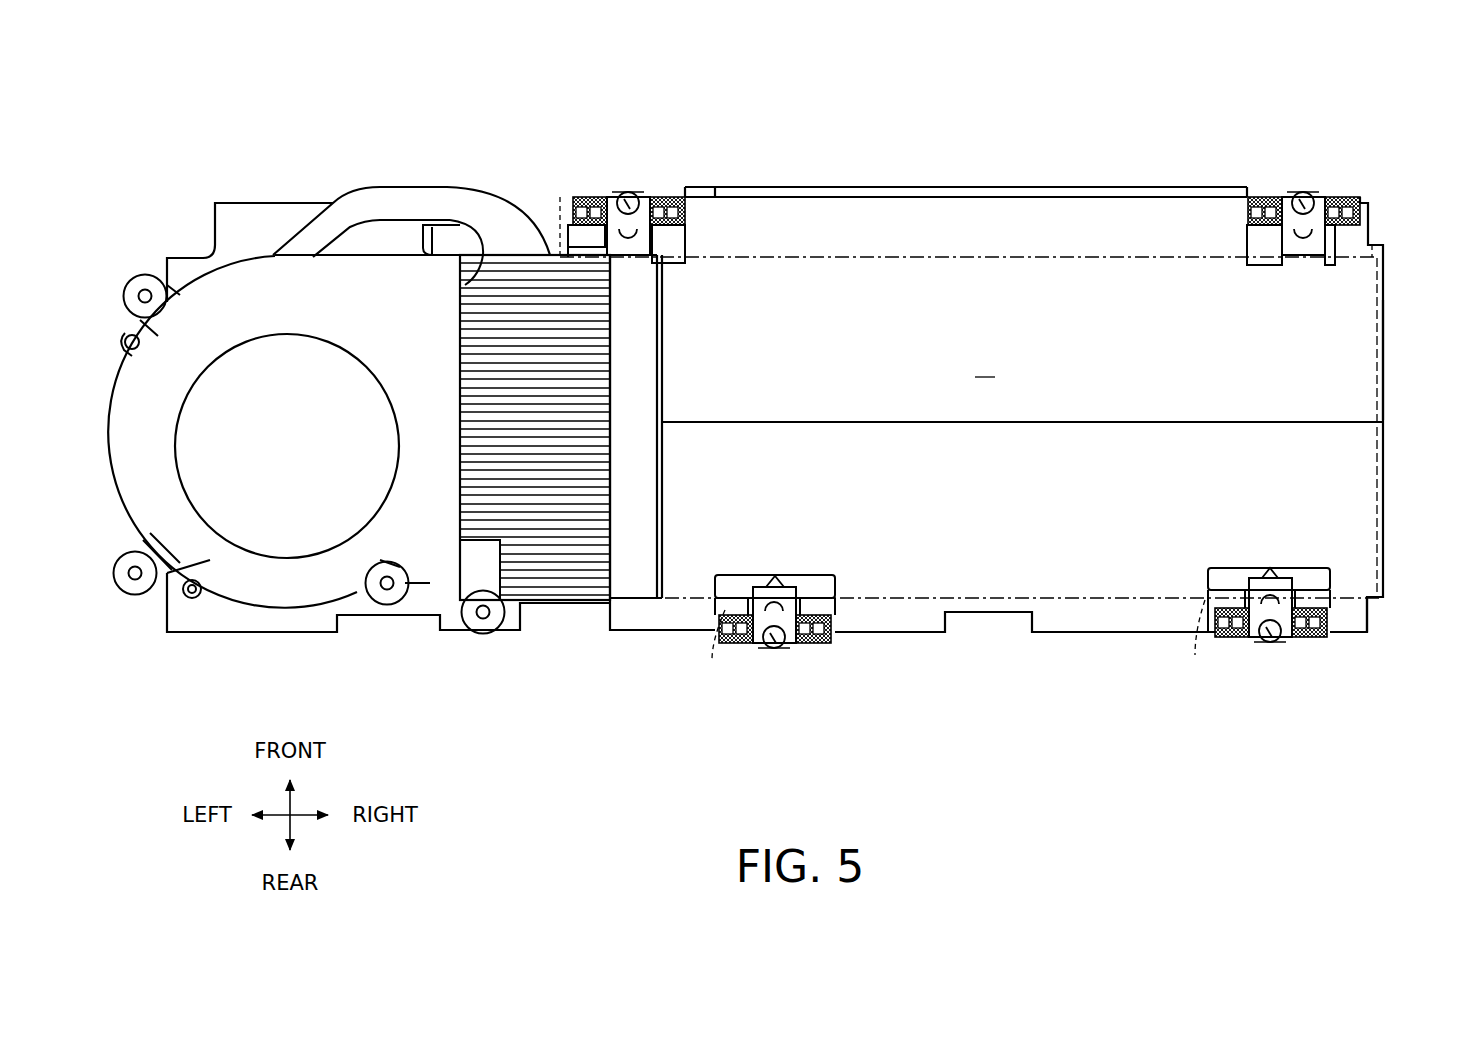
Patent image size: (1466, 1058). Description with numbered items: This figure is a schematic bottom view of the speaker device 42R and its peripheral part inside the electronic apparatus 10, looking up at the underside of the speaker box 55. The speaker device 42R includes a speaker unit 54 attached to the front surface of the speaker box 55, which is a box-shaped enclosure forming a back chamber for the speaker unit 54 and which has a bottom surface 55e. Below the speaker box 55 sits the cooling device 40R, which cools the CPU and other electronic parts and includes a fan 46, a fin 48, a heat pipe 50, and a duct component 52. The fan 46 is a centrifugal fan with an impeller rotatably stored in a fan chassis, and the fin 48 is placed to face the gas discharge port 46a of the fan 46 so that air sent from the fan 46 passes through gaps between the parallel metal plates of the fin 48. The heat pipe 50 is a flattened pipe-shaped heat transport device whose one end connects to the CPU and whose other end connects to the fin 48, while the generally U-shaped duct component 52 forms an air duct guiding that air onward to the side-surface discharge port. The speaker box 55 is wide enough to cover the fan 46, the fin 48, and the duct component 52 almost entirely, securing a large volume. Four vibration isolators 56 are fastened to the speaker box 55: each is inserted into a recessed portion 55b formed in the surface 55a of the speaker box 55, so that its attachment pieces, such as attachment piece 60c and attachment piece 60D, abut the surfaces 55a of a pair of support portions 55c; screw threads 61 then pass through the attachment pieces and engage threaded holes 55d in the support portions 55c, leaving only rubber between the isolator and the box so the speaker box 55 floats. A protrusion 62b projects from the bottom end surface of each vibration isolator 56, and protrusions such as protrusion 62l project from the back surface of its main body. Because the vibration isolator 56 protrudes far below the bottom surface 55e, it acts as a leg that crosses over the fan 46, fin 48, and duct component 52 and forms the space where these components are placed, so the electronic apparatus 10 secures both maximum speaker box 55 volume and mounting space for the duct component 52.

The electronic apparatus 10 is at (184, 81).
The cooling device 40R is at (249, 190).
The speaker device 42R is at (1083, 178).
The fan 46 is at (283, 530).
The gas discharge port 46a is at (480, 280).
The fin 48 is at (568, 560).
The heat pipe 50 is at (430, 192).
The duct component 52 is at (943, 254).
The speaker unit 54 is at (836, 187).
The speaker box 55 is at (985, 580).
The surface 55a is at (690, 215).
The recessed portion 55b is at (663, 255).
The support portion 55c is at (707, 256).
The threaded hole 55d is at (560, 197).
The bottom surface 55e is at (1363, 355).
The vibration isolator 56 is at (645, 186).
The attachment piece 60c is at (575, 197).
The attachment piece 60D is at (697, 197).
The screw thread 61 is at (675, 197).
The protrusion 62b is at (626, 193).
The protrusion 62l is at (1302, 245).